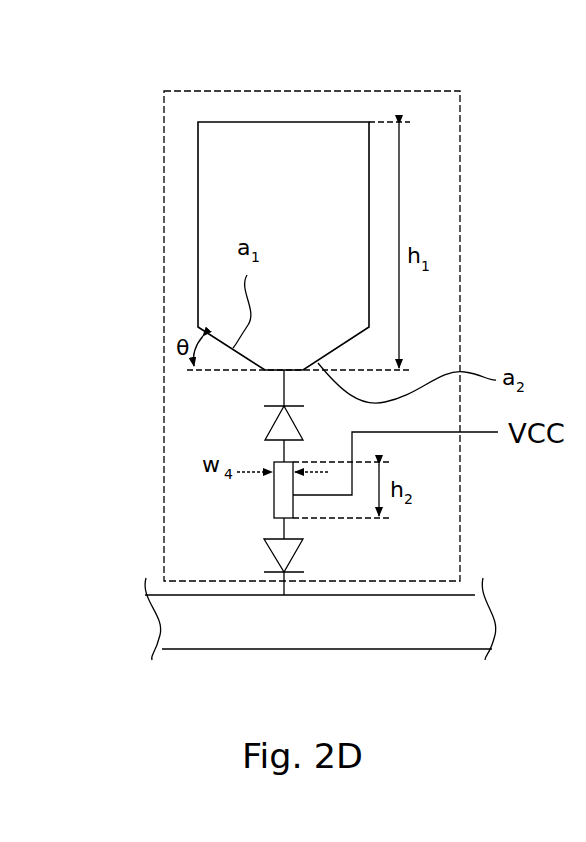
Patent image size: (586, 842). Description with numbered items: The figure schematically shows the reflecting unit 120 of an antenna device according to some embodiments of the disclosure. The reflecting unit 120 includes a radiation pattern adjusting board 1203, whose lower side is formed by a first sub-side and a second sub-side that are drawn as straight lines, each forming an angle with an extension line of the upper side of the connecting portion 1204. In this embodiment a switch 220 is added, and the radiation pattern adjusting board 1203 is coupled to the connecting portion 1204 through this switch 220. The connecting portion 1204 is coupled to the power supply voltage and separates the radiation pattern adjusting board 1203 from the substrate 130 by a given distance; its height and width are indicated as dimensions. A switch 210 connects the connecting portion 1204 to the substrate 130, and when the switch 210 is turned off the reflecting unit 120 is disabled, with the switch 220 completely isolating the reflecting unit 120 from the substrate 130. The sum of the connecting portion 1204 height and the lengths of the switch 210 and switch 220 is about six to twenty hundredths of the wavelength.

The reflecting unit 120 is at (164, 91).
The radiation pattern adjusting board 1203 is at (210, 245).
The switch 220 is at (280, 429).
The connecting portion 1204 is at (277, 510).
The switch 210 is at (280, 550).
The substrate 130 is at (170, 625).